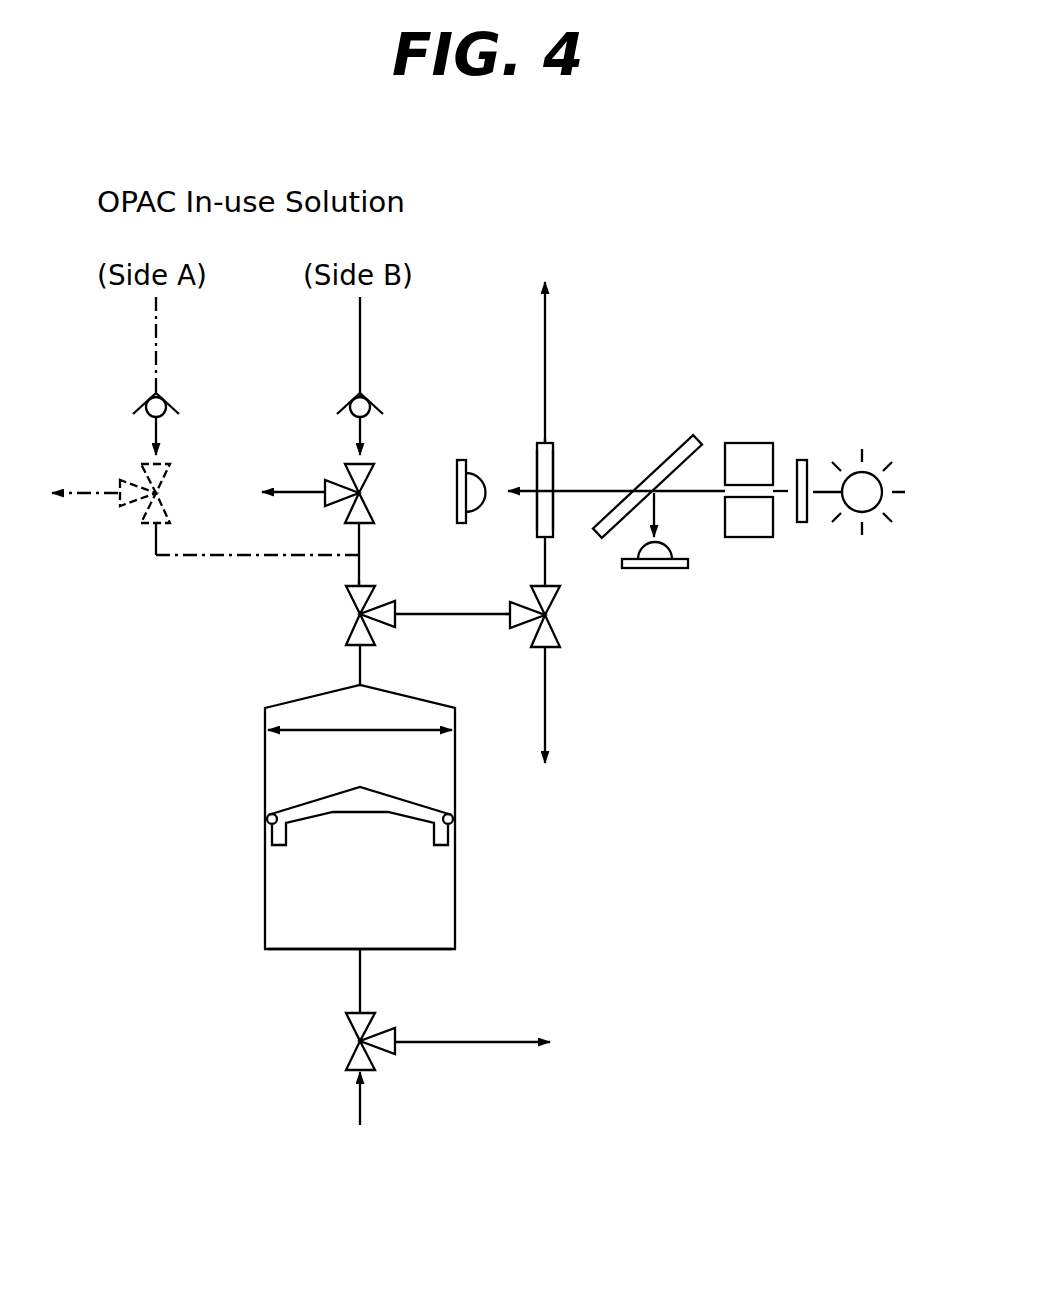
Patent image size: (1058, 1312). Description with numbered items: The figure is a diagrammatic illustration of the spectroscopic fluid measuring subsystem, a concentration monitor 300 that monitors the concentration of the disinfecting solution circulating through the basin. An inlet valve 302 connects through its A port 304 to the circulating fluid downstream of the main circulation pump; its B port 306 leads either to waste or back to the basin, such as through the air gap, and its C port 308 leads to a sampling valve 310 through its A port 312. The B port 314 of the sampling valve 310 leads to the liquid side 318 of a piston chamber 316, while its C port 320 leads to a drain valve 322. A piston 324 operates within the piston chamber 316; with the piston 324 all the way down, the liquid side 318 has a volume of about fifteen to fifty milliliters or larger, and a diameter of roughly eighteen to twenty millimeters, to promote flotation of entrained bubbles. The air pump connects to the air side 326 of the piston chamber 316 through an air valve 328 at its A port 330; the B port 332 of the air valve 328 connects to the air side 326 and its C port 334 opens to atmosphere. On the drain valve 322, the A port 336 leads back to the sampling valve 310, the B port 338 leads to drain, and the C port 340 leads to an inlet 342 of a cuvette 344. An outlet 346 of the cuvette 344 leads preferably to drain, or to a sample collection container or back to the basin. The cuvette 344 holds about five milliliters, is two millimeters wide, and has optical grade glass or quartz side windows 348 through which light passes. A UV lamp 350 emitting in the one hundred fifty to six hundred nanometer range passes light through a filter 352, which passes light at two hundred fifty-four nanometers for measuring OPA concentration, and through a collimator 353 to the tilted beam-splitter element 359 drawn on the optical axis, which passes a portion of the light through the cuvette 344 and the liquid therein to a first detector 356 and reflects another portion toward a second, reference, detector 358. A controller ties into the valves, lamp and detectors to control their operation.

The concentration monitor 300 is at (232, 1143).
The inlet valve 302 is at (322, 460).
The A port of inlet valve 304 is at (365, 460).
The B port of inlet valve 306 is at (330, 492).
The C port of inlet valve 308 is at (363, 527).
The sampling valve 310 is at (336, 614).
The A port of sampling valve 312 is at (348, 586).
The B port of sampling valve 314 is at (348, 646).
The piston chamber 316 is at (260, 762).
The liquid side 318 is at (282, 792).
The C port of sampling valve 320 is at (393, 628).
The drain valve 322 is at (565, 655).
The piston 324 is at (453, 845).
The air side 326 is at (284, 890).
The air valve 328 is at (348, 1040).
The A port of air valve 330 is at (350, 1068).
The B port of air valve 332 is at (355, 1013).
The C port of air valve 334 is at (395, 1052).
The A port of drain valve 336 is at (512, 630).
The B port of drain valve 338 is at (557, 640).
The C port of drain valve 340 is at (556, 590).
The inlet of cuvette 342 is at (552, 540).
The cuvette 344 is at (560, 430).
The outlet of cuvette 346 is at (537, 443).
The side windows 348 is at (555, 465).
The UV lamp 350 is at (886, 540).
The filter 352 is at (815, 445).
The collimator 353 is at (753, 543).
The first detector 356 is at (456, 482).
The second, reference, detector 358 is at (658, 572).
The beam splitter 359 is at (703, 438).